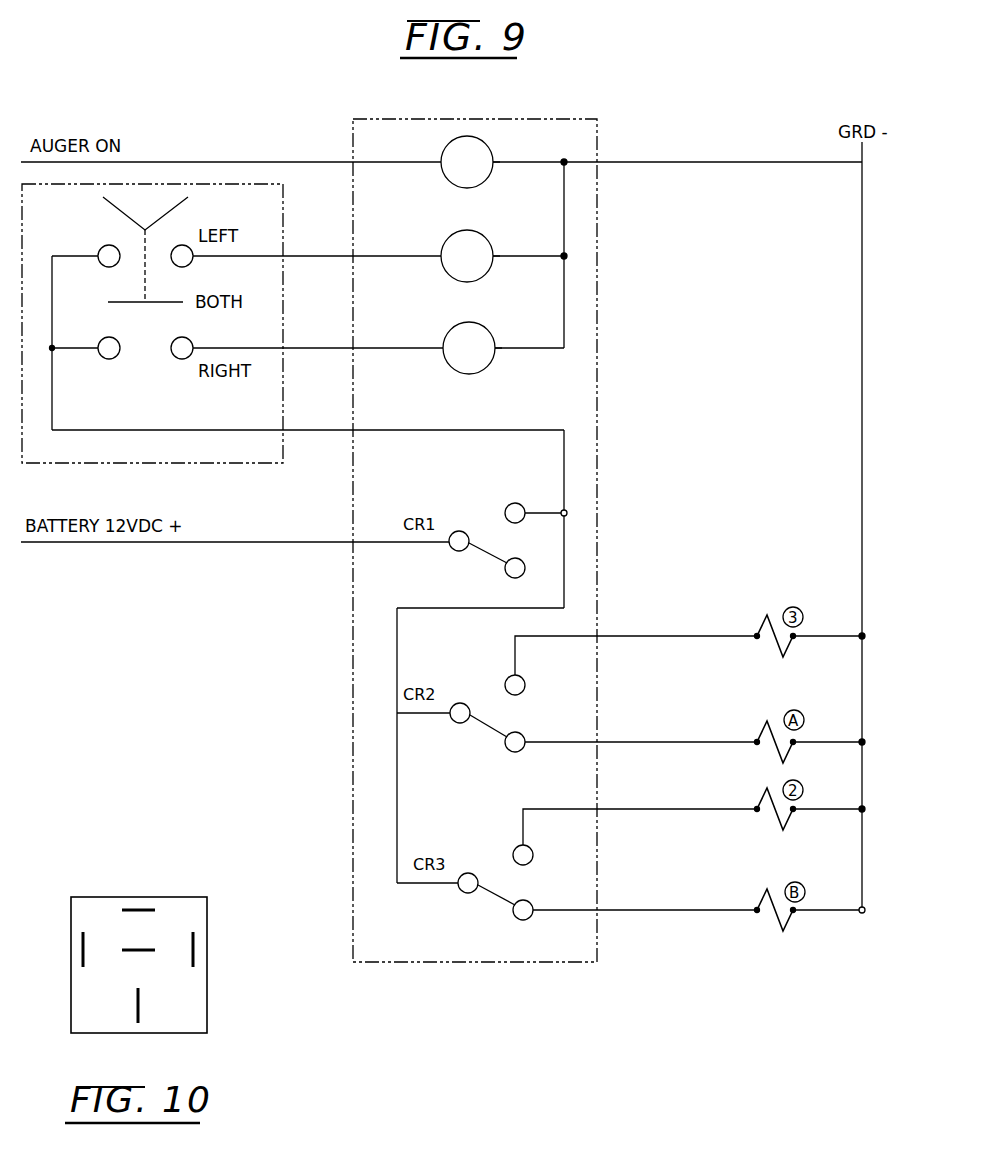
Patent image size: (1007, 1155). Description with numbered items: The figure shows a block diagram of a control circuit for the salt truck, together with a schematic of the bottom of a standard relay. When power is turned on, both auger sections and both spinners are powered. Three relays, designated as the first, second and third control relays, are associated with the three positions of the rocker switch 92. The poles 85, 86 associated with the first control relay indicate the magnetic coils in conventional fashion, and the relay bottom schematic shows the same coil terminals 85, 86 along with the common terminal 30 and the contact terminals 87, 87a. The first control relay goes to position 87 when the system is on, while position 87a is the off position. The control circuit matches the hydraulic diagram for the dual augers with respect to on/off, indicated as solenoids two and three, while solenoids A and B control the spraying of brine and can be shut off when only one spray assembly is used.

In FIG. 9, the relay common terminal 30 is at (472, 718).
In FIG. 10, the relay common terminal 30 is at (140, 1021).
In FIG. 9, the pole 85 is at (454, 255).
In FIG. 10, the pole 85 is at (212, 949).
In FIG. 9, the pole 86 is at (507, 244).
In FIG. 10, the pole 86 is at (65, 949).
In FIG. 9, the position 87 is at (631, 679).
In FIG. 10, the position 87 is at (138, 894).
In FIG. 9, the off position 87a is at (631, 747).
In FIG. 10, the off position 87a is at (138, 962).
In FIG. 9, the rocker switch 92 is at (283, 193).